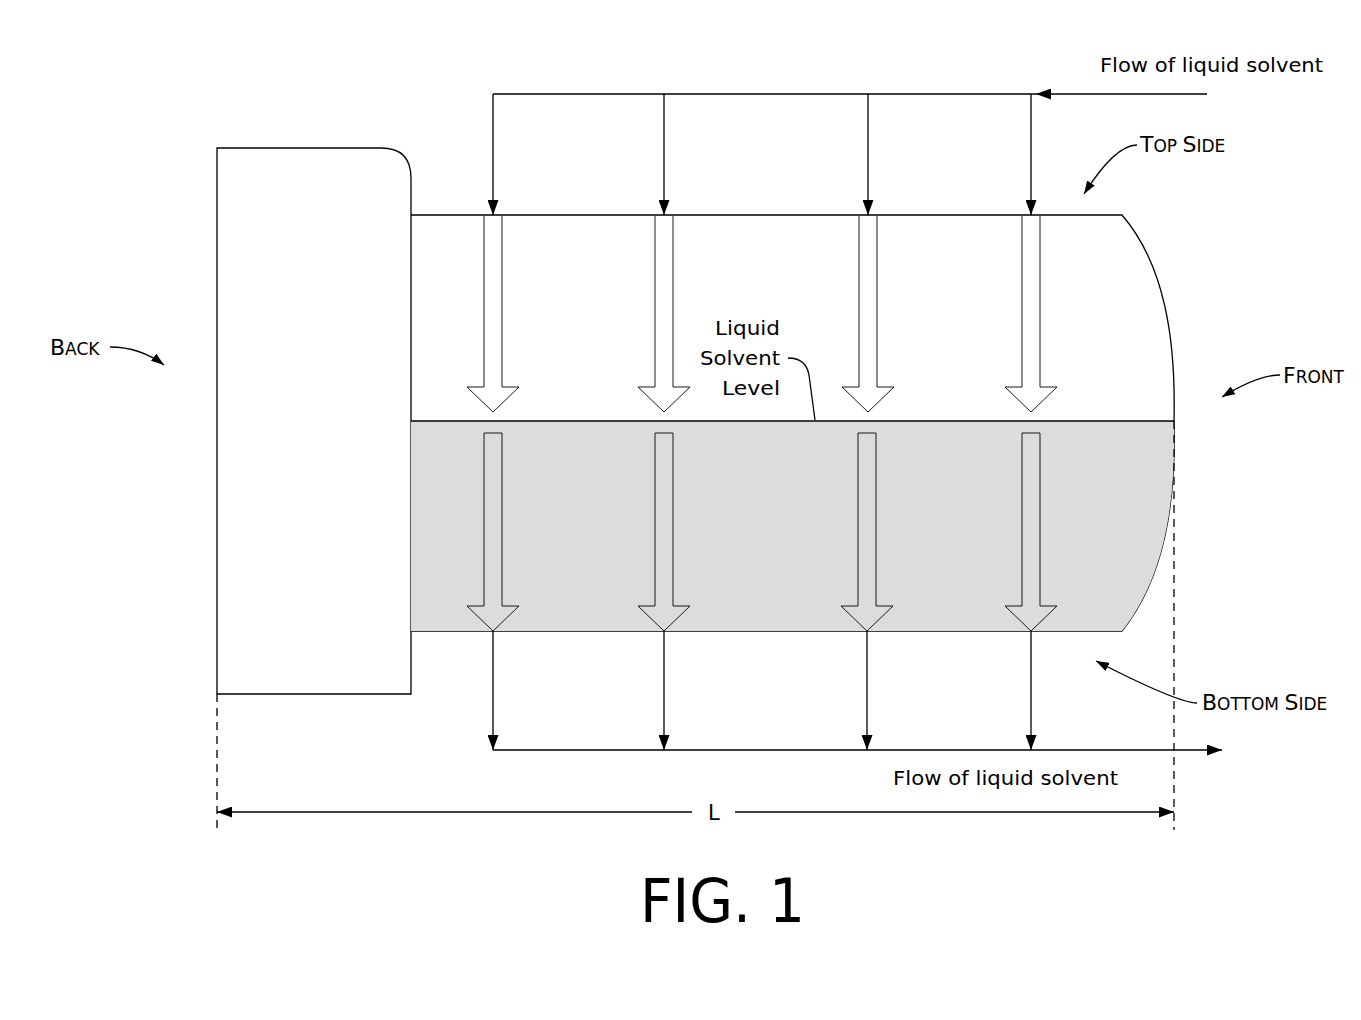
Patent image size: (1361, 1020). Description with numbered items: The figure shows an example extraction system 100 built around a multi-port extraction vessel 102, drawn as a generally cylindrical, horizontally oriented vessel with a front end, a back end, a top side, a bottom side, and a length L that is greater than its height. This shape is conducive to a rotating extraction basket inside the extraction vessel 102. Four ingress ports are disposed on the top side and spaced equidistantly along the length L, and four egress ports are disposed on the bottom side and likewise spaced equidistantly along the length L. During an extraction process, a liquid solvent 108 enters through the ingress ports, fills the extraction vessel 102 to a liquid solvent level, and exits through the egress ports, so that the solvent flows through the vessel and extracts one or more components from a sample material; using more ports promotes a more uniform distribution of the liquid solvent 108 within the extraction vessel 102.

The extraction system 100 is at (167, 60).
The multi-port extraction vessel 102 is at (1152, 254).
The liquid solvent 108 is at (785, 517).